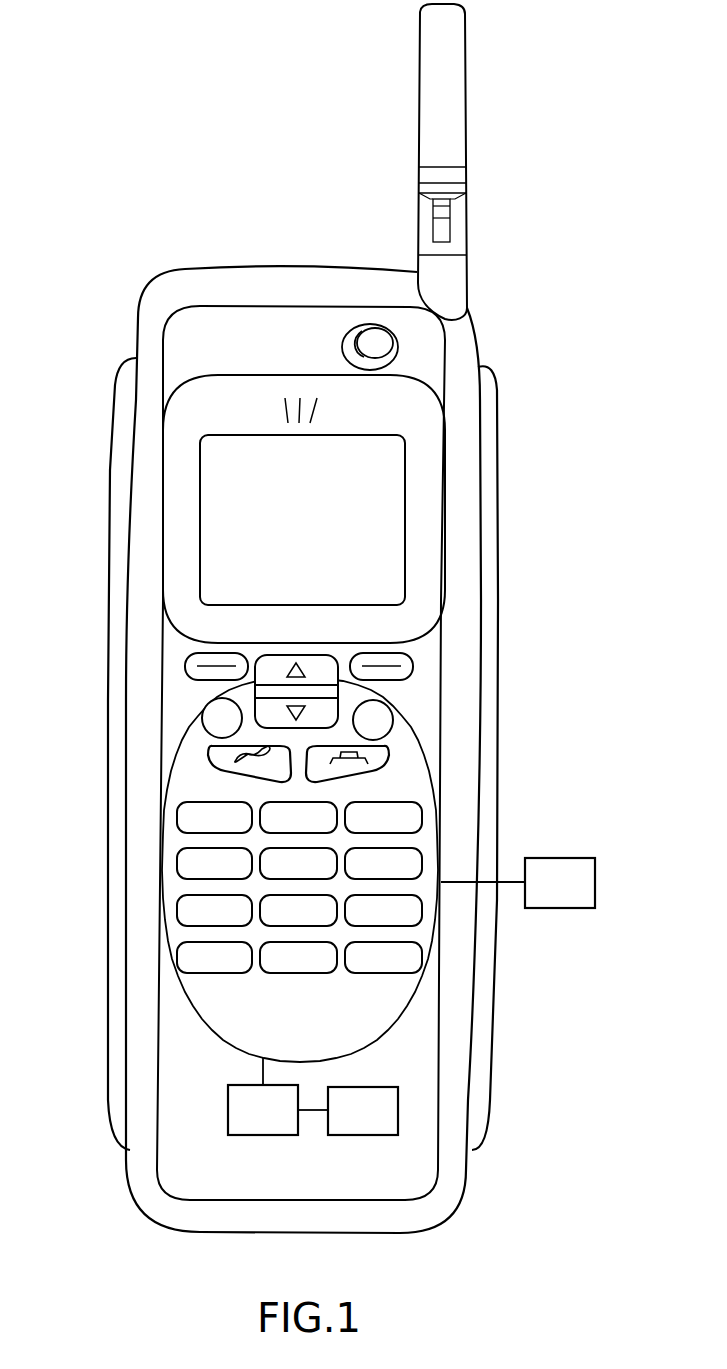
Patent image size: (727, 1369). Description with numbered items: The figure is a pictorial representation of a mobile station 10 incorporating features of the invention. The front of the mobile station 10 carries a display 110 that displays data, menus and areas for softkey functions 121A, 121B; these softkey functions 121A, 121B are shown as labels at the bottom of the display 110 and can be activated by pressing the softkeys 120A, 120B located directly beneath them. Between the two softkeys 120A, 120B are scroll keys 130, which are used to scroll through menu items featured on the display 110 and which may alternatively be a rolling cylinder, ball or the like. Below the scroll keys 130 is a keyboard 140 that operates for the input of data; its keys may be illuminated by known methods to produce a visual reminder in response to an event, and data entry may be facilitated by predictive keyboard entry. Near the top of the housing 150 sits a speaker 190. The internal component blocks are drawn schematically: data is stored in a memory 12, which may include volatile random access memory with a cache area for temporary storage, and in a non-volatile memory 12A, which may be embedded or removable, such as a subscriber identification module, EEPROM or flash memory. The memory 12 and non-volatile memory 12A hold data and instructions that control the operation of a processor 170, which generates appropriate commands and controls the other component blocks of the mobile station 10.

The mobile station 10 is at (163, 208).
The housing 150 is at (300, 265).
The display 110 is at (197, 530).
The softkey function 121A is at (215, 585).
The softkey function 121B is at (400, 585).
The softkey 120A is at (185, 665).
The softkey 120B is at (413, 660).
The scroll keys 130 is at (262, 690).
The keyboard 140 is at (175, 837).
The speaker 190 is at (313, 410).
The processor 170 is at (282, 1125).
The memory 12 is at (376, 1125).
The non-volatile memory 12A is at (582, 898).